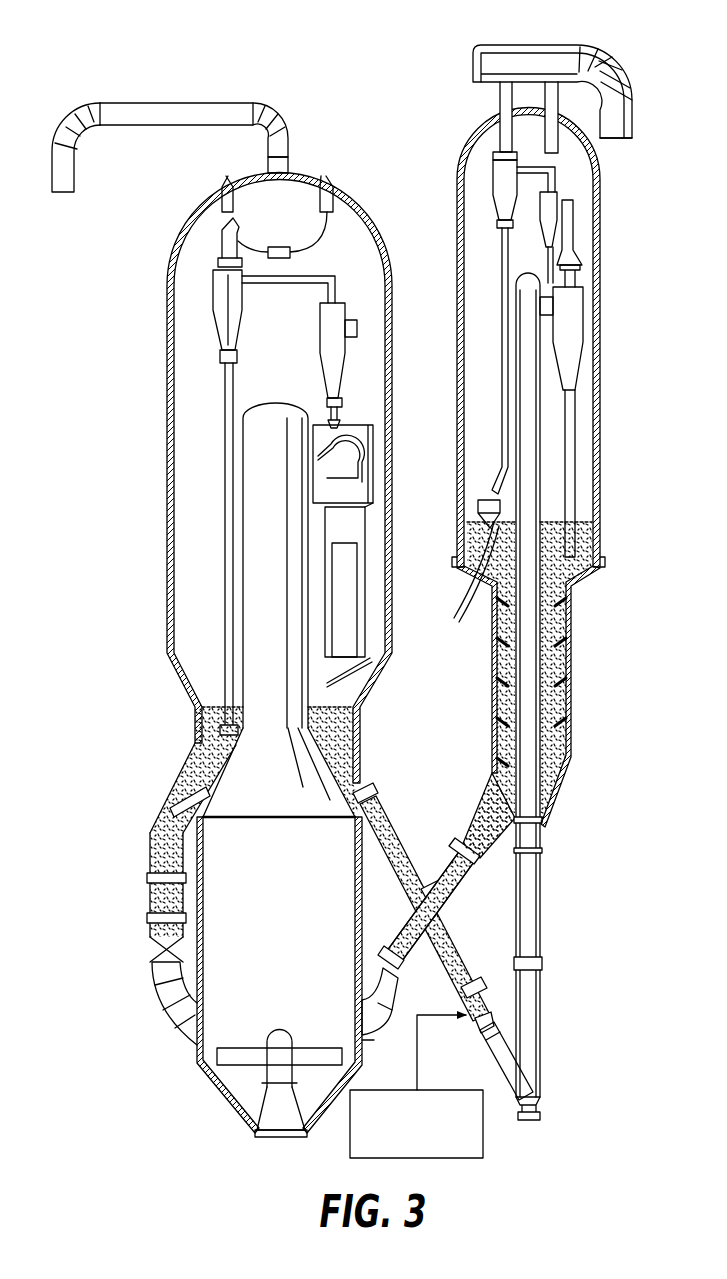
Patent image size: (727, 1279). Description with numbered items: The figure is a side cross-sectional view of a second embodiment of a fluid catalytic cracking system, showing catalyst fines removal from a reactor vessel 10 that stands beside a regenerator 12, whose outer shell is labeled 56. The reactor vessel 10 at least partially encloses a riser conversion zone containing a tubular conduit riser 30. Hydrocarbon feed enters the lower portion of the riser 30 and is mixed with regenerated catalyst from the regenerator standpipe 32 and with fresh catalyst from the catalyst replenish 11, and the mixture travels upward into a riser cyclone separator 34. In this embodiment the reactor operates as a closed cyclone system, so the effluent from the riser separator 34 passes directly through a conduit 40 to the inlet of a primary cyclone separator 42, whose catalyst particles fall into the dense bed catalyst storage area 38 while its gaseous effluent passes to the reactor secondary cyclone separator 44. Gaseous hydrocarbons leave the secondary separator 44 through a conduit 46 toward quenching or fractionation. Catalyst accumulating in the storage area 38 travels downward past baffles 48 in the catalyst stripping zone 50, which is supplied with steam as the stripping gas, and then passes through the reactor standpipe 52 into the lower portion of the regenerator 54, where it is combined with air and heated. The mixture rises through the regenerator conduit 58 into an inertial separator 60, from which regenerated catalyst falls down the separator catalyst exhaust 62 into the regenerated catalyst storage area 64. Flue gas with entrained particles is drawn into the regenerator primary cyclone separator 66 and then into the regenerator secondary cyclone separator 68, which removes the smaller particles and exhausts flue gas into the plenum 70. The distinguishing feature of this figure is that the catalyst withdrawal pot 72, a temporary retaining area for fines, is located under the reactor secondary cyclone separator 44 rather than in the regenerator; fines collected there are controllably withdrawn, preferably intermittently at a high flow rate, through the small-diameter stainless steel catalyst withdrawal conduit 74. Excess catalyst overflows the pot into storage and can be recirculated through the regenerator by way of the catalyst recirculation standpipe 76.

The reactor vessel 10 is at (622, 425).
The catalyst replenish 11 is at (470, 1090).
The regenerator 12 is at (158, 608).
The tubular conduit riser 30 is at (545, 870).
The regenerator standpipe 32 is at (385, 822).
The riser cyclone separator 34 is at (583, 323).
The dense bed catalyst storage area 38 is at (583, 540).
The conduit 40 is at (574, 232).
The primary cyclone separator 42 is at (555, 195).
The secondary cyclone separator 44 is at (497, 172).
The conduit 46 is at (548, 45).
The baffles 48 is at (553, 633).
The catalyst stripping zone 50 is at (571, 718).
The reactor standpipe 52 is at (441, 868).
The lower portion of regenerator 54 is at (178, 897).
The reactor vessel shell 56 is at (168, 370).
The regenerator conduit 58 is at (258, 487).
The inertial separator 60 is at (368, 449).
The separator catalyst exhaust 62 is at (357, 600).
The regenerated catalyst storage area 64 is at (345, 748).
The regenerator primary cyclone separator 66 is at (355, 312).
The regenerator secondary cyclone separator 68 is at (218, 283).
The plenum 70 is at (298, 198).
The catalyst withdrawal pot 72 is at (478, 508).
The catalyst withdrawal conduit 74 is at (458, 618).
The catalyst recirculation standpipe 76 is at (150, 833).